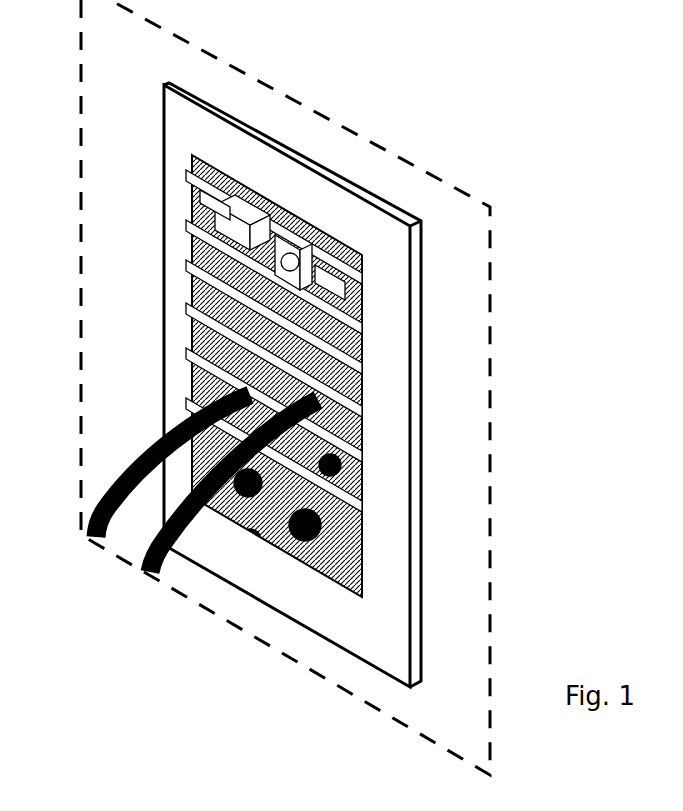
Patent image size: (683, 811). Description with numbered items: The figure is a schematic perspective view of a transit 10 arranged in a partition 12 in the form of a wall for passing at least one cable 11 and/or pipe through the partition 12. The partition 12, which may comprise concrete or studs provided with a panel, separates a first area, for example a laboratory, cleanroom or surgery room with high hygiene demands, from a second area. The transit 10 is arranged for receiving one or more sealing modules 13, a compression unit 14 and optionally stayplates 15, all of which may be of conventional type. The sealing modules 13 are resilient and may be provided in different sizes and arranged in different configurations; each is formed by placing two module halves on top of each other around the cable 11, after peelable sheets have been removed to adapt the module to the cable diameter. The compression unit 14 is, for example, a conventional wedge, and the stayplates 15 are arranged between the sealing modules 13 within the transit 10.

The transit 10 is at (396, 328).
The cable 11 is at (118, 485).
The partition 12 is at (468, 435).
The sealing module 13 is at (285, 540).
The compression unit 14 is at (273, 232).
The stayplate 15 is at (357, 501).